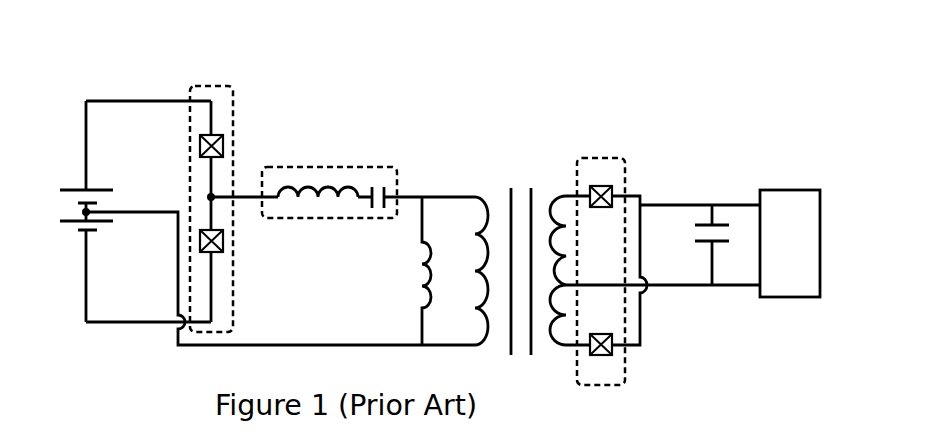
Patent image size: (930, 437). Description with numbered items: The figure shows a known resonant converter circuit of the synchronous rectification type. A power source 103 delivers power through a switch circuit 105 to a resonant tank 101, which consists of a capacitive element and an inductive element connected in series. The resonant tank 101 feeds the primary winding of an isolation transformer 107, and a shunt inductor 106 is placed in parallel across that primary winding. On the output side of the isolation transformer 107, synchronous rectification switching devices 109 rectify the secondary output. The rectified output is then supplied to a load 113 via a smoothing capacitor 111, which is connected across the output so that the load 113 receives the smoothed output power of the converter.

The resonant tank 101 is at (329, 180).
The power source 103 is at (53, 210).
The switch circuit 105 is at (211, 195).
The shunt inductor 106 is at (397, 285).
The isolation transformer 107 is at (520, 258).
The synchronous rectification switching devices 109 is at (601, 258).
The smoothing capacitor 111 is at (732, 311).
The load 113 is at (790, 243).